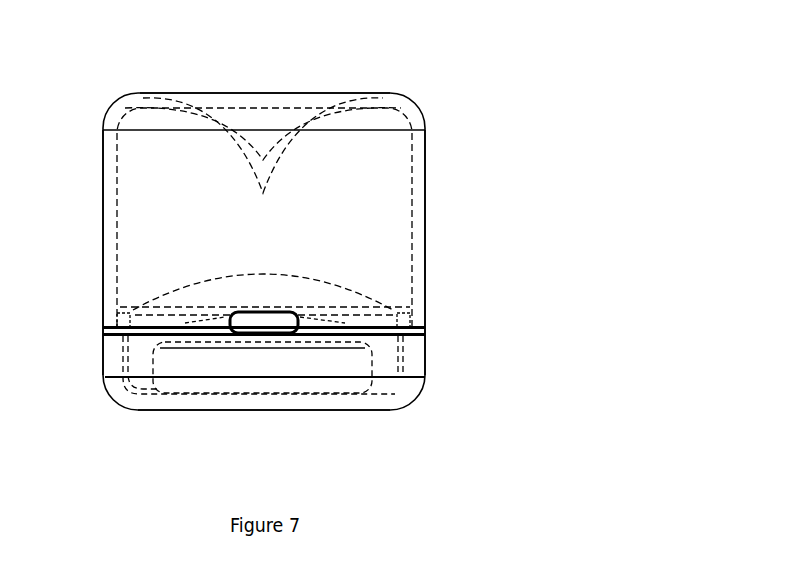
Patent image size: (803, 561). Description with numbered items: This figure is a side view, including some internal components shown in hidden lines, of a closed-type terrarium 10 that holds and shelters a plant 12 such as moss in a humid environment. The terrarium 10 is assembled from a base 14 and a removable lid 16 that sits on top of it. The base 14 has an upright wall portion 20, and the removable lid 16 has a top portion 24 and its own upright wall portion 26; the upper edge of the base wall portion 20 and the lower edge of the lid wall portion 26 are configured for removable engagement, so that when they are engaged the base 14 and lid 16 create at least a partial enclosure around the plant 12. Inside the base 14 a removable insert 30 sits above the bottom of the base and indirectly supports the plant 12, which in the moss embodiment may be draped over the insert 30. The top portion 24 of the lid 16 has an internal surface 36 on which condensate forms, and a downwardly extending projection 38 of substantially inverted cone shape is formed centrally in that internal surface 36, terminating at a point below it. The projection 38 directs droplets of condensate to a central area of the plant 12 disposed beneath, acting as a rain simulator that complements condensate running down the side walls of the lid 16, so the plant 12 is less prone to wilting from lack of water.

The terrarium 10 is at (464, 62).
The plant 12 is at (339, 286).
The base 14 is at (428, 357).
The removable lid 16 is at (426, 200).
The upright wall portion 20 is at (117, 352).
The top portion 24 is at (258, 90).
The upright wall portion 26 is at (422, 252).
The removable insert 30 is at (215, 362).
The internal surface 36 is at (143, 109).
The downwardly extending projection 38 is at (293, 147).